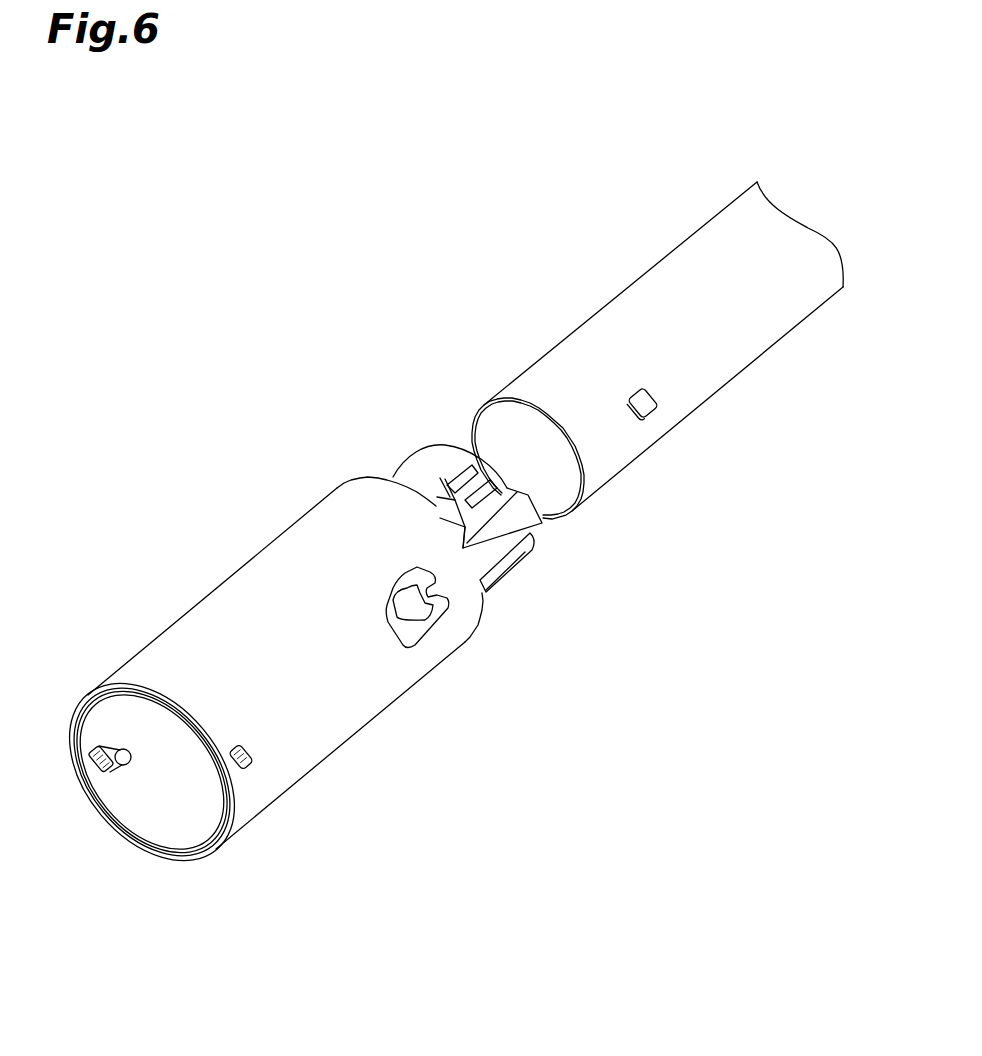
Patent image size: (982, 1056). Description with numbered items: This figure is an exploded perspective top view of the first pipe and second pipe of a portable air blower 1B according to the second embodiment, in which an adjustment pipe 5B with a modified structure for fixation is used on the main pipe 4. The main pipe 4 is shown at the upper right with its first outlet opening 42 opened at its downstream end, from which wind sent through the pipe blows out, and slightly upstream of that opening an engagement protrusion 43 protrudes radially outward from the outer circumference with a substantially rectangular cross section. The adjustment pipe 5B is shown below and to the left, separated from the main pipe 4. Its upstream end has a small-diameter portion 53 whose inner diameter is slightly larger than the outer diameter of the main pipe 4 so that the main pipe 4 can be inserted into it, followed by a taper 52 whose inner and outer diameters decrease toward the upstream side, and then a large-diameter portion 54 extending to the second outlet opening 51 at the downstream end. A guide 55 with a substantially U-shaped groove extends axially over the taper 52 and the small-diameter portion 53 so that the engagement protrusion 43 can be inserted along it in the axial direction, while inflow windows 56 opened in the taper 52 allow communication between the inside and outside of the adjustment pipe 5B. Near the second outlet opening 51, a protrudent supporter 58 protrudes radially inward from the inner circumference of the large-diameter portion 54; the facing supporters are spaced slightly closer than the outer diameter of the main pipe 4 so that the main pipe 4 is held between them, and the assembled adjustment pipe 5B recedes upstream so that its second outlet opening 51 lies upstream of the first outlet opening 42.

The portable air blower 1B is at (244, 309).
The adjustment pipe 5B is at (403, 861).
The main pipe 4 is at (737, 350).
The first outlet opening 42 is at (550, 507).
The engagement protrusion 43 is at (650, 410).
The second outlet opening 51 is at (150, 842).
The taper 52 is at (440, 497).
The small-diameter portion 53 is at (447, 457).
The large-diameter portion 54 is at (197, 640).
The guide 55 is at (503, 545).
The inflow window 56 is at (463, 527).
The protrudent supporter 58 is at (108, 763).